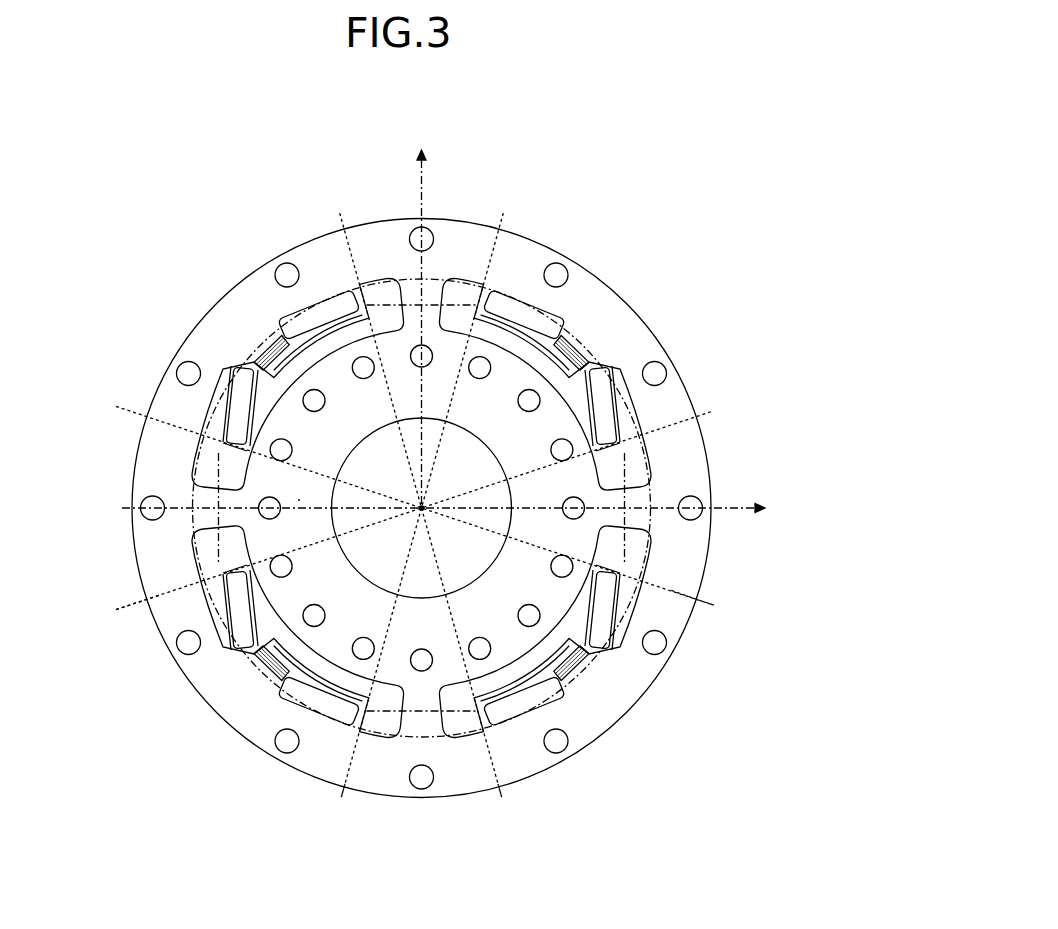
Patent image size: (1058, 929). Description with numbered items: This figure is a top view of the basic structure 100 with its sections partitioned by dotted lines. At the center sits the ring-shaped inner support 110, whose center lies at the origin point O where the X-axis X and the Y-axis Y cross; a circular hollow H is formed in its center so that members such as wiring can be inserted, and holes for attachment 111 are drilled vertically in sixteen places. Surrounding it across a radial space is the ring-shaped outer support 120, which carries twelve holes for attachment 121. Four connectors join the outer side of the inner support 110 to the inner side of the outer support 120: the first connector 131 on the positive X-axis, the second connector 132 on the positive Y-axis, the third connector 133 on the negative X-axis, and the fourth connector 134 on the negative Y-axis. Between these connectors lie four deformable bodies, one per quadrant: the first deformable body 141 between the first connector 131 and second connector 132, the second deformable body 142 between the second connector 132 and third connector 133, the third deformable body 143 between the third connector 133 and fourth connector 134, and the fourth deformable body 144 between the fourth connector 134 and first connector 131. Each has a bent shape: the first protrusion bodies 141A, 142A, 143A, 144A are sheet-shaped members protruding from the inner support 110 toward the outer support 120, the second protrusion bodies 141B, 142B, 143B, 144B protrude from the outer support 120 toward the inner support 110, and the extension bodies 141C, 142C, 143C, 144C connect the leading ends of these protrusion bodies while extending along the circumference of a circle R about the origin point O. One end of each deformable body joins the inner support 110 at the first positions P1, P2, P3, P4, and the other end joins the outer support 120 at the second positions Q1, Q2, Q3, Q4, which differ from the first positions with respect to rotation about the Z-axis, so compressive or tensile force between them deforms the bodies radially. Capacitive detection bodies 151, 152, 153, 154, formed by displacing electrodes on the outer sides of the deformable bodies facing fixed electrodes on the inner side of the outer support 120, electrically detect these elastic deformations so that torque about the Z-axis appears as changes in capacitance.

The basic structure 100 is at (650, 145).
The inner support 110 is at (438, 402).
The holes for attachment 111 is at (323, 412).
The outer support 120 is at (598, 318).
The holes for attachment 121 is at (432, 228).
The first connector 131 is at (637, 515).
The second connector 132 is at (415, 292).
The third connector 133 is at (207, 515).
The fourth connector 134 is at (411, 714).
The first deformable body 141 is at (686, 207).
The first protrusion body 141A is at (613, 443).
The second protrusion body 141B is at (490, 297).
The extension body 141C is at (604, 387).
The second deformable body 142 is at (176, 198).
The first protrusion body 142A is at (228, 441).
The second protrusion body 142B is at (356, 300).
The extension body 142C is at (257, 374).
The third deformable body 143 is at (204, 890).
The first protrusion body 143A is at (226, 574).
The second protrusion body 143B is at (356, 730).
The extension body 143C is at (232, 647).
The fourth deformable body 144 is at (794, 689).
The first protrusion body 144A is at (613, 573).
The second protrusion body 144B is at (496, 723).
The extension body 144C is at (560, 697).
The detection body 151 is at (585, 360).
The detection body 152 is at (262, 351).
The detection body 153 is at (260, 663).
The detection body 154 is at (592, 662).
The X-axis X is at (453, 508).
The Y-axis Y is at (421, 316).
The origin point O is at (435, 520).
The hollow H is at (479, 573).
The circle R is at (300, 500).
The first position P1 is at (590, 454).
The first position P2 is at (262, 449).
The first position P3 is at (262, 554).
The first position P4 is at (590, 562).
The second position Q1 is at (483, 283).
The second position Q2 is at (363, 283).
The second position Q3 is at (341, 797).
The second position Q4 is at (502, 797).